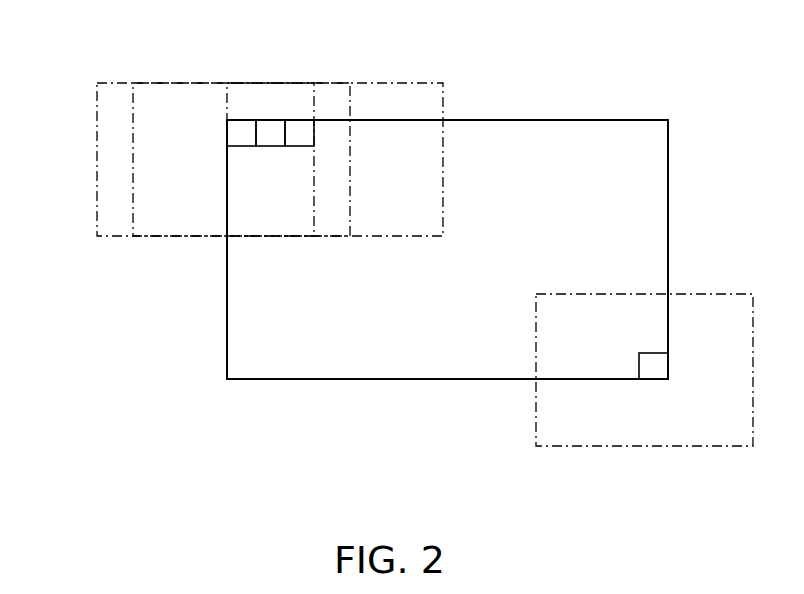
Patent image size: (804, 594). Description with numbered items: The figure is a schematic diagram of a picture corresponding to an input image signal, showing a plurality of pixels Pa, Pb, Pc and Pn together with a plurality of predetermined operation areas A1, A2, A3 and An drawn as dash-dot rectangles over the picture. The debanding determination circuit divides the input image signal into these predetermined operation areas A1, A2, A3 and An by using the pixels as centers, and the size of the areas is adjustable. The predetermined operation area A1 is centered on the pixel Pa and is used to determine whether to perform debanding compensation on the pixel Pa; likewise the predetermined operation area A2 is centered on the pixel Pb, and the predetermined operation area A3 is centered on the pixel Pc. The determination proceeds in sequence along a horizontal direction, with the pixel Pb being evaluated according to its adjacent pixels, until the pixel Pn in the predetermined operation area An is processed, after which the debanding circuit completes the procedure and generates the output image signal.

The predetermined operation area A1 is at (97, 225).
The predetermined operation area A2 is at (133, 166).
The predetermined operation area A3 is at (227, 109).
The predetermined operation area An is at (536, 431).
The pixel Pa is at (242, 133).
The pixel Pb is at (268, 133).
The pixel Pc is at (298, 133).
The pixel Pn is at (653, 366).